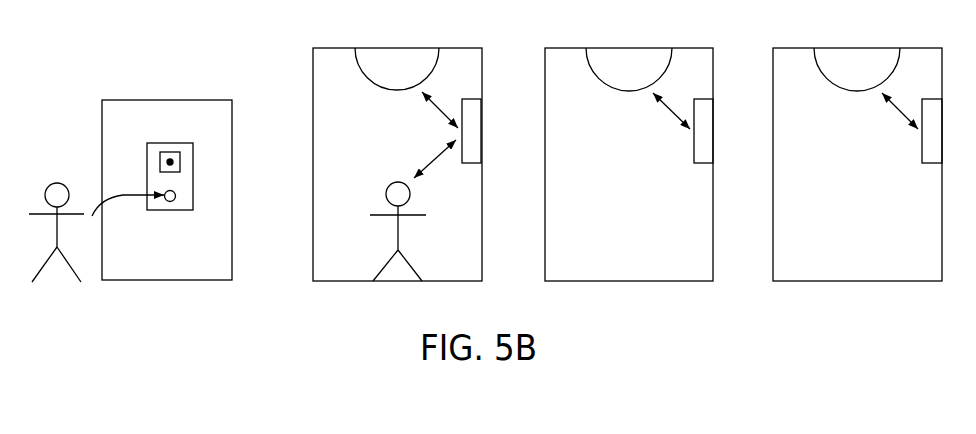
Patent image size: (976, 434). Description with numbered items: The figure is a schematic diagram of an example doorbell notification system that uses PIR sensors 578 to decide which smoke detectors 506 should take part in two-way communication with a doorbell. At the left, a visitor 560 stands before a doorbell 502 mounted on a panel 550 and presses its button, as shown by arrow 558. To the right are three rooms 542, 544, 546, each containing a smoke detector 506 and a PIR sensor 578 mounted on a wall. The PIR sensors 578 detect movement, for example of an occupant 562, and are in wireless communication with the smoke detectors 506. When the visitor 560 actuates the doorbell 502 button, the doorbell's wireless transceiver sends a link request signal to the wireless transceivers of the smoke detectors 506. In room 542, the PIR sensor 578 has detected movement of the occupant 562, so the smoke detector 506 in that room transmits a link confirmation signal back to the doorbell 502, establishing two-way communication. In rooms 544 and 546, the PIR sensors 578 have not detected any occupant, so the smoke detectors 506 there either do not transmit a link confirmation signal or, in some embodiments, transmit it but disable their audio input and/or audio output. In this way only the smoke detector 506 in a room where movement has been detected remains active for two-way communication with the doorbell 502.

The doorbell 502 is at (147, 142).
The smoke detector 506 is at (416, 77).
The room 542 is at (345, 48).
The room 544 is at (575, 48).
The room 546 is at (803, 48).
The device housing 550 is at (125, 98).
The arrow 558 is at (123, 197).
The visitor 560 is at (62, 290).
The occupant 562 is at (393, 224).
The PIR sensor 578 is at (467, 99).